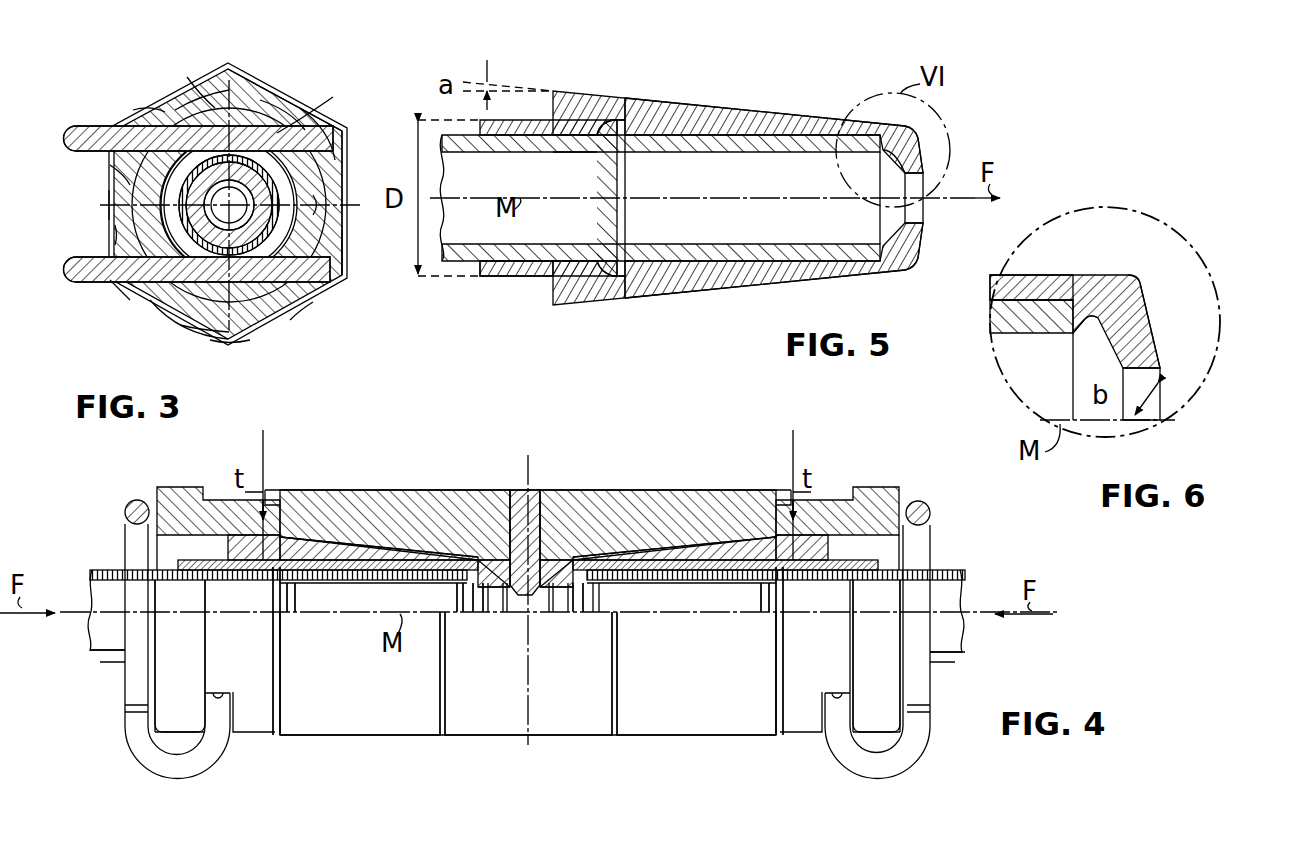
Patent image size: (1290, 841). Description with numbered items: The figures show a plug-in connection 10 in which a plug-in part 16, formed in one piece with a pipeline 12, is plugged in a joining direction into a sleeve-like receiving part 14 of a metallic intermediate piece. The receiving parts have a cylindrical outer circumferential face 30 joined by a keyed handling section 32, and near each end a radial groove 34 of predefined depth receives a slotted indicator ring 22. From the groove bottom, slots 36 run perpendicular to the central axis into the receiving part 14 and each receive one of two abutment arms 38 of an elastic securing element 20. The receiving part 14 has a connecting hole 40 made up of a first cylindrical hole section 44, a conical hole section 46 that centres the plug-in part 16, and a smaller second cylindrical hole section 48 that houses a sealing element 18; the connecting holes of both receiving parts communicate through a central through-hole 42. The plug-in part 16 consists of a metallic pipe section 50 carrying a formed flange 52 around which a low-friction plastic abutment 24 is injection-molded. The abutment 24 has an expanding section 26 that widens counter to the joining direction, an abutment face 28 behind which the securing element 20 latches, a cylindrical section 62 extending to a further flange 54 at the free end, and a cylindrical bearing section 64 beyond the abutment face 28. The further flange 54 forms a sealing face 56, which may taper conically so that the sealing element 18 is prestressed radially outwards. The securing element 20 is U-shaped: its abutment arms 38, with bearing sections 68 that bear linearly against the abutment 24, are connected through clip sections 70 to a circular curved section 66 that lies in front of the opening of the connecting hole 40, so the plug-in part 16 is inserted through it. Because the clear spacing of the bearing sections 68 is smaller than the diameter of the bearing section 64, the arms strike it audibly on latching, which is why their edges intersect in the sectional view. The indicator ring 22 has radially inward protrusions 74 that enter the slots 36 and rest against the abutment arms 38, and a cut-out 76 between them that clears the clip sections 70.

In FIG. 3, the plug-in connection 10 is at (152, 92).
In FIG. 4, the plug-in connection 10 is at (308, 484).
In FIG. 3, the pipeline 12 is at (229, 205).
In FIG. 5, the pipeline 12 is at (452, 263).
In FIG. 6, the pipeline 12 is at (1031, 360).
In FIG. 4, the pipeline 12 is at (103, 568).
In FIG. 3, the receiving part 14 is at (348, 150).
In FIG. 4, the receiving part 14 is at (370, 712).
In FIG. 3, the plug-in part 16 is at (352, 238).
In FIG. 5, the plug-in part 16 is at (712, 100).
In FIG. 6, the plug-in part 16 is at (1117, 253).
In FIG. 4, the plug-in part 16 is at (370, 550).
In FIG. 4, the sealing element 18 is at (500, 557).
In FIG. 3, the securing element 20 is at (110, 282).
In FIG. 4, the securing element 20 is at (137, 740).
In FIG. 3, the indicator ring 22 is at (277, 90).
In FIG. 4, the indicator ring 22 is at (260, 705).
In FIG. 3, the abutment 24 is at (110, 173).
In FIG. 5, the abutment 24 is at (588, 93).
In FIG. 6, the abutment 24 is at (1040, 272).
In FIG. 4, the abutment 24 is at (236, 533).
In FIG. 5, the expanding section 26 is at (675, 108).
In FIG. 4, the expanding section 26 is at (400, 550).
In FIG. 3, the abutment face 28 is at (115, 235).
In FIG. 5, the abutment face 28 is at (530, 120).
In FIG. 4, the abutment face 28 is at (230, 540).
In FIG. 3, the cylindrical outer circumferential face 30 is at (235, 66).
In FIG. 4, the cylindrical outer circumferential face 30 is at (432, 720).
In FIG. 3, the handling section 32 is at (277, 133).
In FIG. 4, the handling section 32 is at (585, 720).
In FIG. 3, the radial groove 34 is at (100, 206).
In FIG. 4, the radial groove 34 is at (282, 486).
In FIG. 3, the slots 36 is at (293, 85).
In FIG. 4, the slots 36 is at (222, 690).
In FIG. 3, the abutment arms 38 is at (333, 122).
In FIG. 4, the abutment arms 38 is at (213, 712).
In FIG. 3, the connecting hole 40 is at (313, 302).
In FIG. 4, the connecting hole 40 is at (124, 516).
In FIG. 3, the central through-hole 42 is at (229, 205).
In FIG. 4, the central through-hole 42 is at (467, 590).
In FIG. 3, the first cylindrical hole section 44 is at (72, 140).
In FIG. 4, the first cylindrical hole section 44 is at (203, 588).
In FIG. 4, the conical hole section 46 is at (345, 575).
In FIG. 4, the second cylindrical hole section 48 is at (478, 612).
In FIG. 3, the pipe section 50 is at (180, 325).
In FIG. 5, the pipe section 50 is at (553, 156).
In FIG. 4, the pipe section 50 is at (200, 657).
In FIG. 5, the flange 52 is at (612, 138).
In FIG. 4, the flange 52 is at (275, 588).
In FIG. 5, the further flange 54 is at (912, 262).
In FIG. 6, the further flange 54 is at (1148, 300).
In FIG. 4, the further flange 54 is at (545, 590).
In FIG. 5, the sealing face 56 is at (925, 228).
In FIG. 6, the sealing face 56 is at (1165, 328).
In FIG. 4, the sealing face 56 is at (527, 512).
In FIG. 5, the cylindrical section 62 is at (822, 126).
In FIG. 6, the cylindrical section 62 is at (1060, 274).
In FIG. 4, the cylindrical section 62 is at (485, 557).
In FIG. 3, the bearing section 64 is at (315, 195).
In FIG. 5, the bearing section 64 is at (520, 279).
In FIG. 4, the bearing section 64 is at (183, 541).
In FIG. 4, the curved section 66 is at (122, 664).
In FIG. 3, the bearing sections 68 is at (210, 340).
In FIG. 3, the clip sections 70 is at (88, 126).
In FIG. 4, the clip sections 70 is at (178, 772).
In FIG. 3, the protrusions 74 is at (187, 77).
In FIG. 3, the cut-out 76 is at (133, 110).